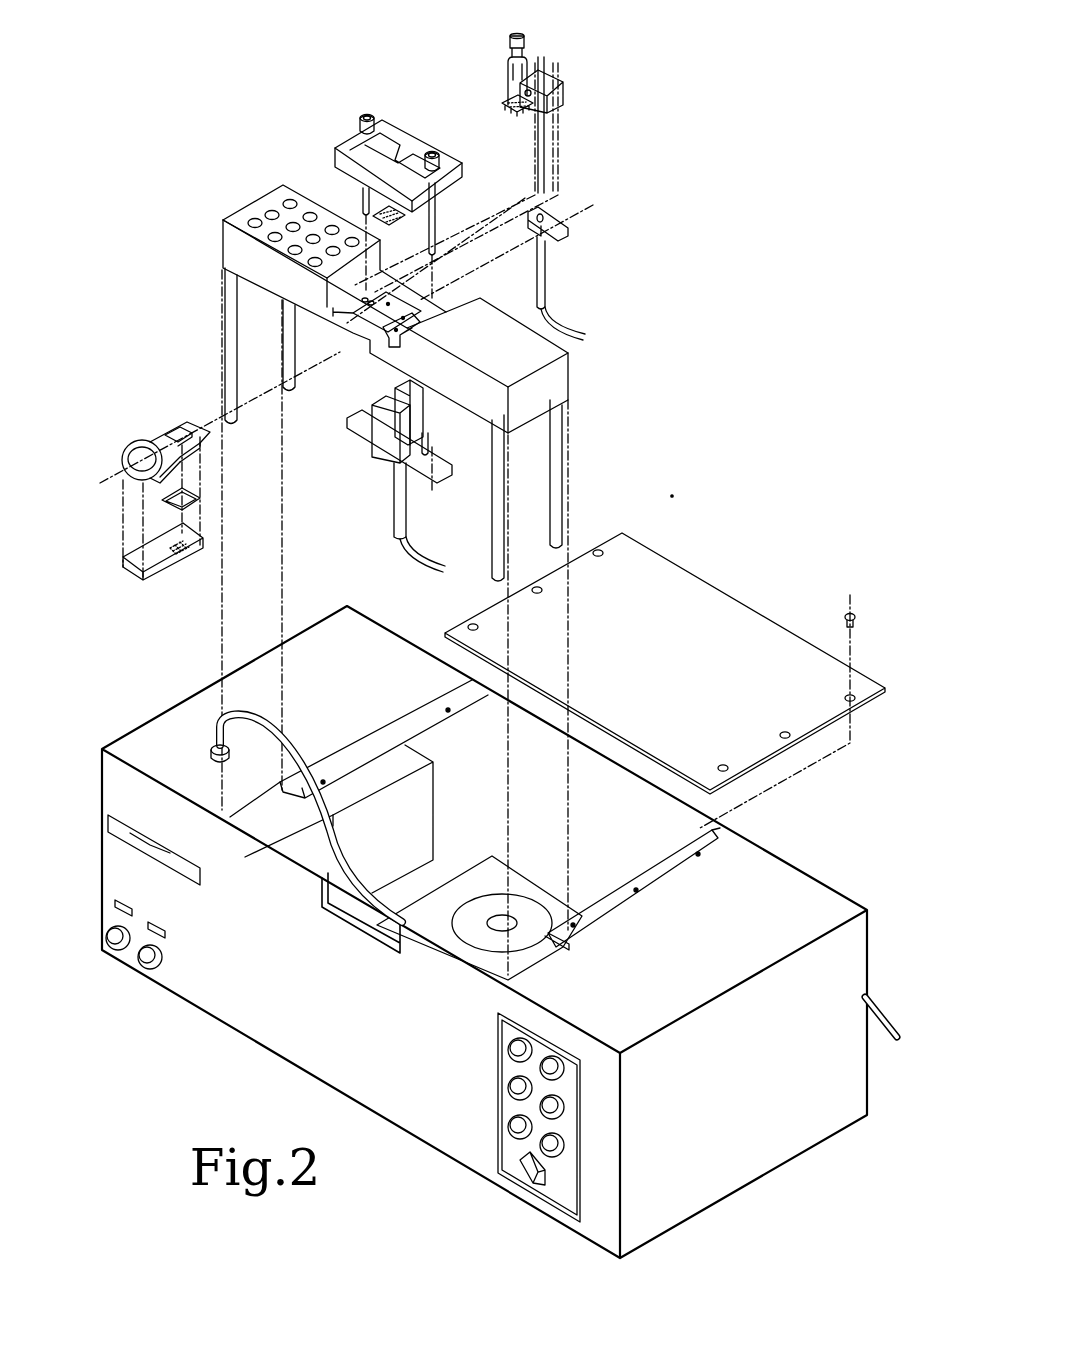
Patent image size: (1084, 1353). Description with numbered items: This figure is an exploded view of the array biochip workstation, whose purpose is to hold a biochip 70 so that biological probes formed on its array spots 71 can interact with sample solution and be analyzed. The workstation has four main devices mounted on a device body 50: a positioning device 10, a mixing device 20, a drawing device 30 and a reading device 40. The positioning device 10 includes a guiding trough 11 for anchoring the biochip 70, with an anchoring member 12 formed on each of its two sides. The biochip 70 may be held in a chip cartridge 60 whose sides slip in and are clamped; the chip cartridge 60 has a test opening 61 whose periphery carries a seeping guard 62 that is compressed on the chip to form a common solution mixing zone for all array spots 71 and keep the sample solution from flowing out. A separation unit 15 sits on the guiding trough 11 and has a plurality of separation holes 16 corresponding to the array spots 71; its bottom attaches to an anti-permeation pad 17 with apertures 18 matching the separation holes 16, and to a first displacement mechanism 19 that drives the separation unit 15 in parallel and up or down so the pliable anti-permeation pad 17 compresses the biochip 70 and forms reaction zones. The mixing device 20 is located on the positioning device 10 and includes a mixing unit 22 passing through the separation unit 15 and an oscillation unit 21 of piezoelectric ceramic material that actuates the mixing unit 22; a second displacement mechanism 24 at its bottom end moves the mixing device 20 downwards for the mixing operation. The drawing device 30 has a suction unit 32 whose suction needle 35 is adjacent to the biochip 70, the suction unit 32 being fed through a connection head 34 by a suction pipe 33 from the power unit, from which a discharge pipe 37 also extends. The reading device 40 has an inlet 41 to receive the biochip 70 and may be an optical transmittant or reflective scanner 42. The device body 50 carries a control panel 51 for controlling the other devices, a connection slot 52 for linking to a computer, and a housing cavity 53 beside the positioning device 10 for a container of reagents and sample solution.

The positioning device 10 is at (217, 196).
The guiding trough 11 is at (335, 316).
The anchoring member 12 is at (355, 326).
The separation unit 15 is at (335, 133).
The separation holes 16 is at (408, 157).
The anti-permeation pad 17 is at (379, 222).
The apertures 18 is at (436, 216).
The first displacement mechanism 19 is at (397, 510).
The mixing device 20 is at (627, 82).
The oscillation unit 21 is at (553, 83).
The mixing unit 22 is at (510, 100).
The second displacement mechanism 24 is at (547, 272).
The drawing device 30 is at (527, 890).
The suction unit 32 is at (510, 42).
The suction pipe 33 is at (215, 728).
The connection head 34 is at (207, 752).
The suction needle 35 is at (502, 64).
The discharge pipe 37 is at (880, 1005).
The reading device 40 is at (147, 867).
The inlet 41 is at (103, 817).
The scanner 42 is at (413, 815).
The device body 50 is at (739, 1107).
The control panel 51 is at (507, 1155).
The connection slot 52 is at (168, 937).
The housing cavity 53 is at (250, 222).
The chip cartridge 60 is at (198, 412).
The test opening 61 is at (193, 427).
The seeping guard 62 is at (197, 500).
The biochip 70 is at (167, 573).
The array spots 71 is at (188, 547).